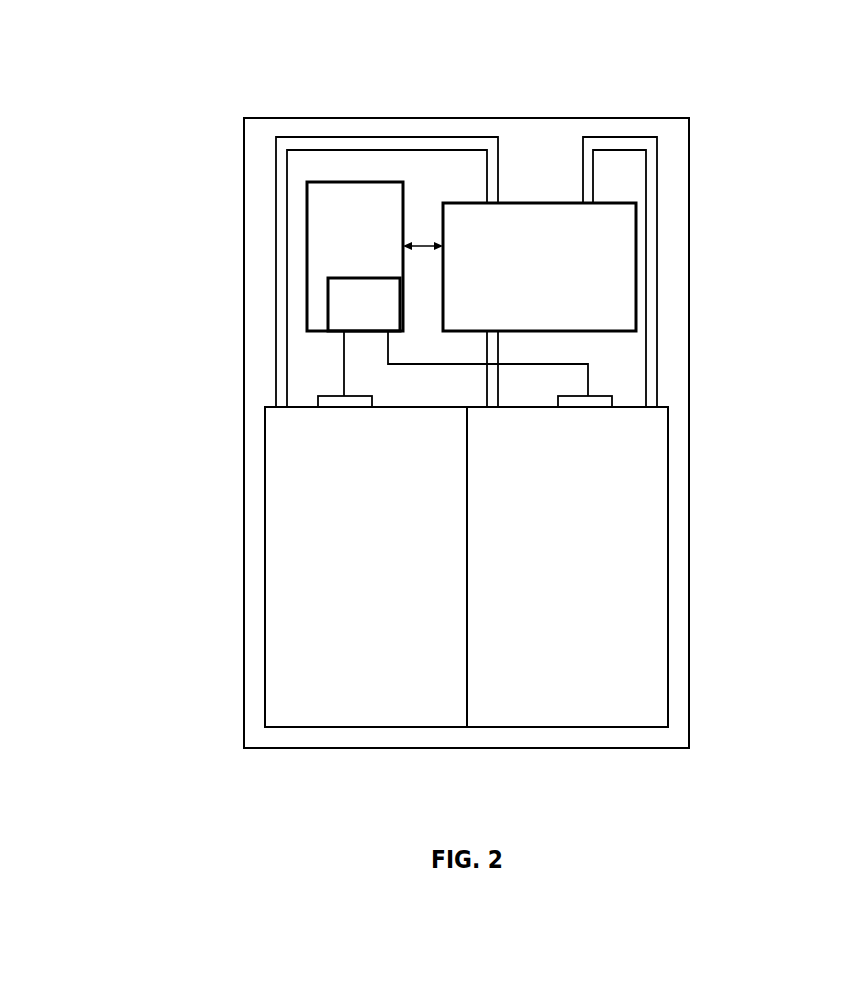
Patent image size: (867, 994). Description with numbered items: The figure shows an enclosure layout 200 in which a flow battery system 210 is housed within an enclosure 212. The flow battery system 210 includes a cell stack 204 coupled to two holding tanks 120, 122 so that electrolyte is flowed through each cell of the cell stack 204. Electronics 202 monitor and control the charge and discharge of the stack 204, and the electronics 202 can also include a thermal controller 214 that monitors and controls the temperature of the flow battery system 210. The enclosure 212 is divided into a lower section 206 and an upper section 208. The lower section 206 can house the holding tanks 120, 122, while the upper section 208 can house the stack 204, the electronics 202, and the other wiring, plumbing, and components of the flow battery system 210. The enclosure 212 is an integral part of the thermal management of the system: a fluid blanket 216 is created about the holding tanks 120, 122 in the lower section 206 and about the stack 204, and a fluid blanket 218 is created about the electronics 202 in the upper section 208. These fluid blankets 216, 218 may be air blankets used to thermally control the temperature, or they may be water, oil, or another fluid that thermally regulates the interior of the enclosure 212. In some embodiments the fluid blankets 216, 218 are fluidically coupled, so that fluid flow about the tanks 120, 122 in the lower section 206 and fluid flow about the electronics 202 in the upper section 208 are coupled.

The enclosure layout 200 is at (158, 193).
The electronics 202 is at (379, 245).
The cell stack 204 is at (563, 277).
The lower section 206 is at (678, 481).
The upper section 208 is at (678, 214).
The flow battery system 210 is at (562, 349).
The enclosure 212 is at (244, 491).
The thermal controller 214 is at (361, 305).
The fluid blanket 216 is at (689, 618).
The fluid blanket 218 is at (540, 127).
The holding tank 120 is at (391, 585).
The holding tank 122 is at (592, 585).